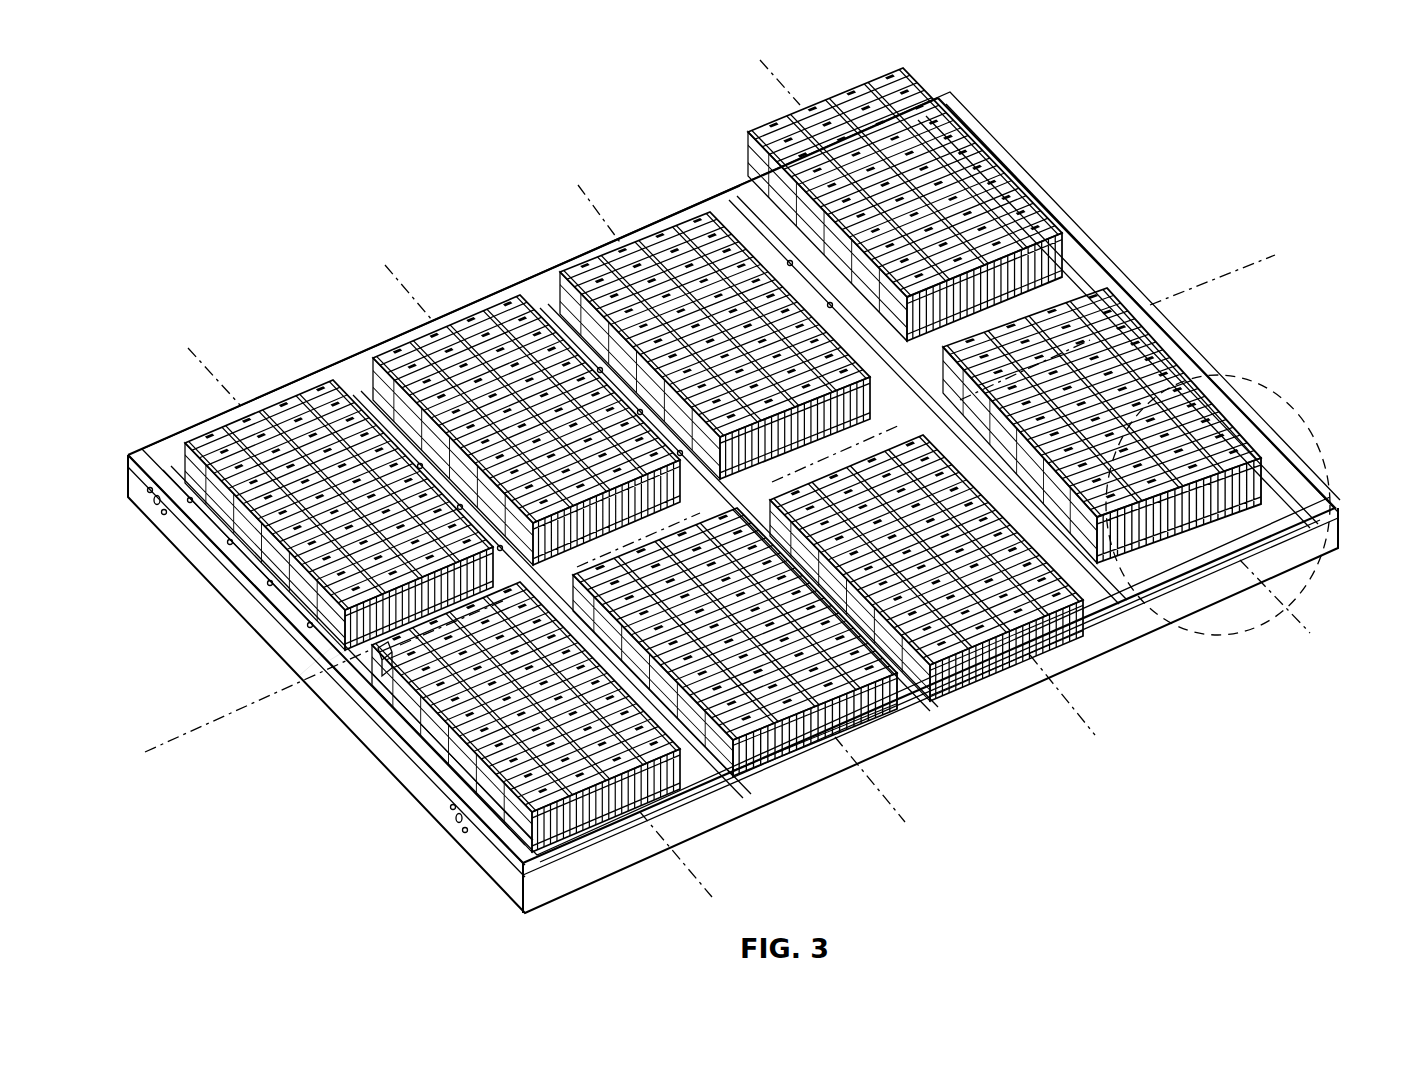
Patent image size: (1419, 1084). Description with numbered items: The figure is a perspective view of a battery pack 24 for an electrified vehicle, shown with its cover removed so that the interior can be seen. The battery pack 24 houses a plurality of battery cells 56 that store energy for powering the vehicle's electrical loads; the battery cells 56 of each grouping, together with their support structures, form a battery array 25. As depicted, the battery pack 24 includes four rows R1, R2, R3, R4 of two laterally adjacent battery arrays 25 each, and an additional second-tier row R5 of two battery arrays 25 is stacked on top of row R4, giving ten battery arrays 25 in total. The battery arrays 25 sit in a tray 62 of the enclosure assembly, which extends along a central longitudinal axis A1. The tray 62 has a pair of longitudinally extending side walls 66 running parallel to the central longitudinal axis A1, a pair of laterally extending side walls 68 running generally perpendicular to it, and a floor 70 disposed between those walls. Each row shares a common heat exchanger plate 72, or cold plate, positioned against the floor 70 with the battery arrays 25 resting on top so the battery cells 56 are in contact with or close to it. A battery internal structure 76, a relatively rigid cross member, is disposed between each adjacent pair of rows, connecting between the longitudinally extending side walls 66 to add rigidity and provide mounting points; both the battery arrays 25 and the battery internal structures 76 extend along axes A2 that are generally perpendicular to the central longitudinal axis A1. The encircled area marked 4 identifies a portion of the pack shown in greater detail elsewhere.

The battery pack 24 is at (1027, 95).
The battery array 25 is at (1017, 166).
The battery cell 56 is at (903, 75).
The tray 62 is at (560, 880).
The longitudinally extending side wall 66 is at (262, 405).
The laterally extending side wall 68 is at (1330, 506).
The floor 70 is at (237, 533).
The heat exchanger plate 72 is at (383, 657).
The battery internal structure 76 is at (795, 765).
The detail view 4 is at (1250, 408).
The central longitudinal axis A1 is at (195, 729).
The axis A2 is at (680, 866).
The row R1 is at (195, 418).
The row R2 is at (393, 340).
The row R3 is at (582, 250).
The row R4 is at (748, 220).
The row R5 is at (798, 108).